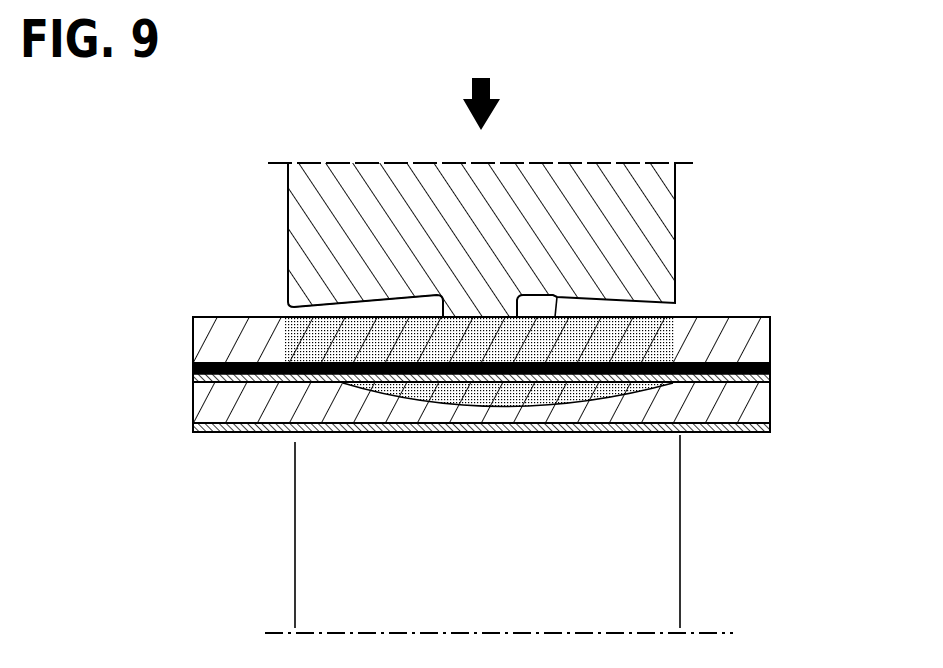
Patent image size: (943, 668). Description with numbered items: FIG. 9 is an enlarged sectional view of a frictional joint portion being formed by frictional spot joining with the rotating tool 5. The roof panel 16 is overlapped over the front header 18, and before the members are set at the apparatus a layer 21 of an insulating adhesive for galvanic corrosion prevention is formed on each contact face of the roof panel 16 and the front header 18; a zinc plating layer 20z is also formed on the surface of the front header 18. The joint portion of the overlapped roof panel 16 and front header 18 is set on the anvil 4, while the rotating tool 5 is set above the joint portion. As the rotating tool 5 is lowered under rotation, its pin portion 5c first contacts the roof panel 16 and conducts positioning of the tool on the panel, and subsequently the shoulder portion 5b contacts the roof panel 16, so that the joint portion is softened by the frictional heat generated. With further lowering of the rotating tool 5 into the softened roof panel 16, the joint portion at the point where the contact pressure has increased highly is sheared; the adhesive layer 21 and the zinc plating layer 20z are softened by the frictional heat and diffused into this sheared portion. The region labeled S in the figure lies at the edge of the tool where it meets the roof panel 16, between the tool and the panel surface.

The rotating tool 5 is at (676, 178).
The shoulder portion 5b is at (554, 297).
The pin portion 5c is at (484, 316).
The gap S is at (290, 313).
The roof panel 16 is at (736, 337).
The layer of insulating adhesive 21 is at (193, 366).
The zinc plating layer 20z is at (193, 428).
The front header 18 is at (738, 403).
The anvil 4 is at (653, 498).